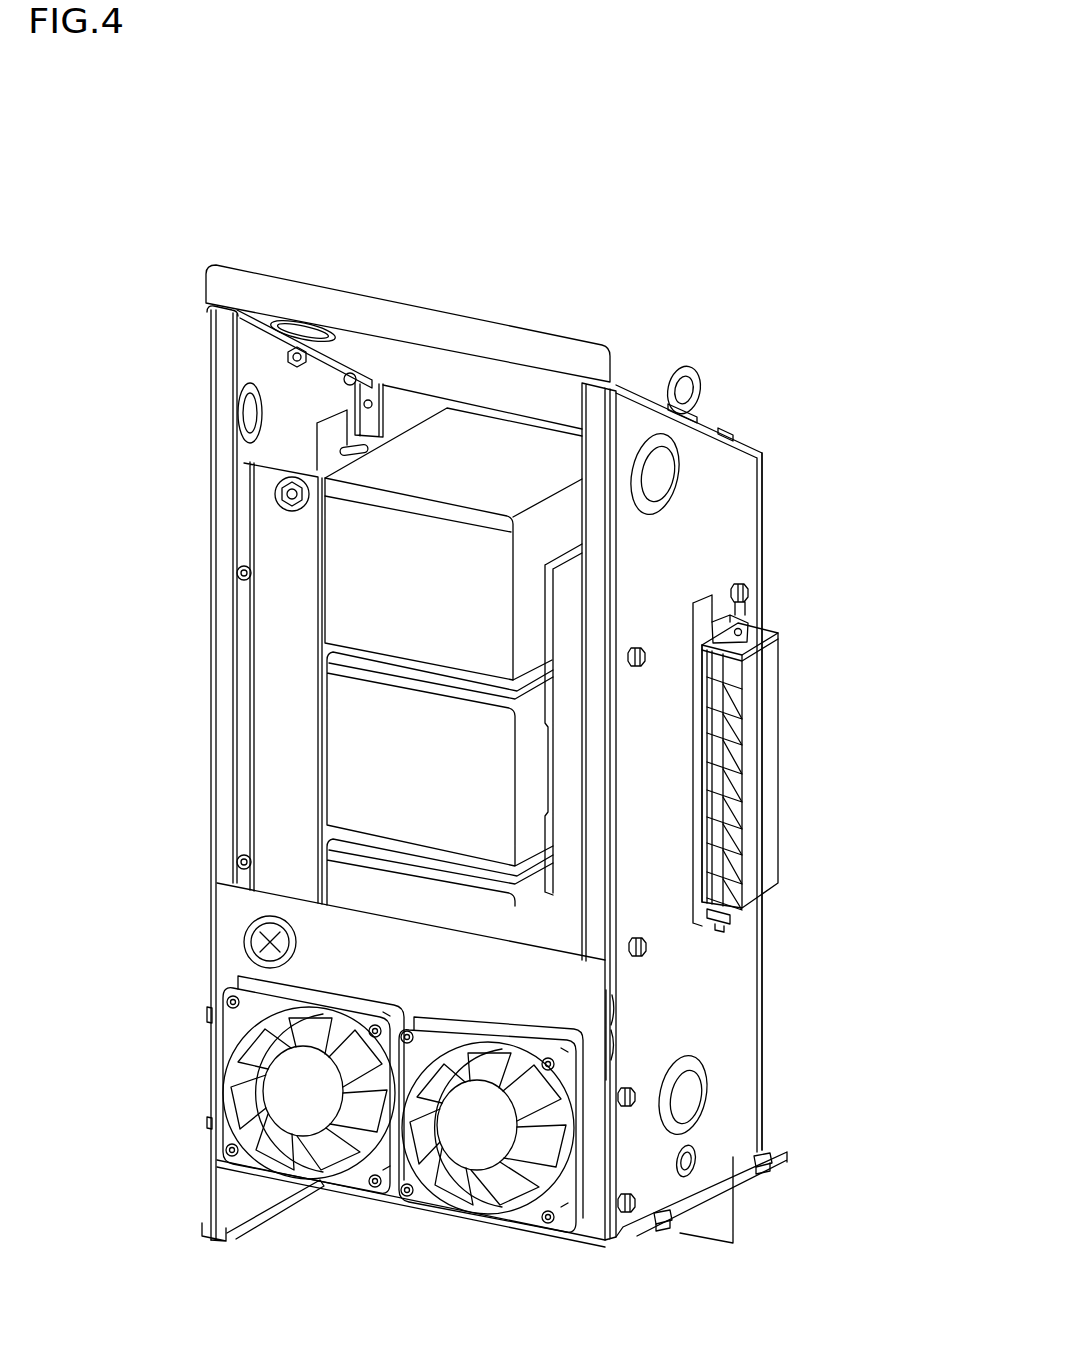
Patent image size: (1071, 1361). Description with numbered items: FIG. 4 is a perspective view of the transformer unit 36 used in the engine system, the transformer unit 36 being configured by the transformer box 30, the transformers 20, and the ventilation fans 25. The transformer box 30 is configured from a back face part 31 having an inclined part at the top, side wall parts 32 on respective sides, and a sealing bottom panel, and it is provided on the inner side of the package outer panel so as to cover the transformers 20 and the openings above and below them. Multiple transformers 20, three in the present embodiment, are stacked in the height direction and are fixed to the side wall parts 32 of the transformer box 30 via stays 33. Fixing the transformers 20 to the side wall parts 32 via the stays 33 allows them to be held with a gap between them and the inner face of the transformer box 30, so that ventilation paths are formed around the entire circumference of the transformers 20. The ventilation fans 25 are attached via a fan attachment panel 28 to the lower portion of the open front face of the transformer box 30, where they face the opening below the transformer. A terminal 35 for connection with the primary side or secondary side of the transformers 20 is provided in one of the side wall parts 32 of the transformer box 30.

The transformer 20 is at (380, 568).
The ventilation fan 25 is at (340, 1150).
The fan attachment panel 28 is at (228, 942).
The transformer box 30 is at (787, 481).
The back face part 31 is at (763, 570).
The side wall part 32 is at (260, 368).
The stay 33 is at (273, 612).
The terminal 35 is at (762, 760).
The transformer unit 36 is at (656, 309).